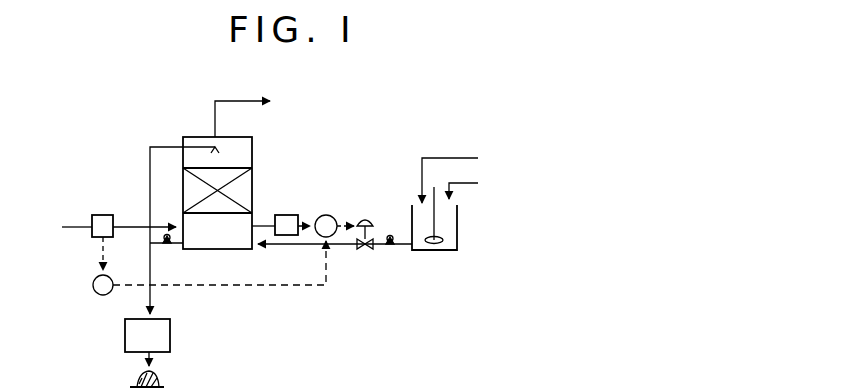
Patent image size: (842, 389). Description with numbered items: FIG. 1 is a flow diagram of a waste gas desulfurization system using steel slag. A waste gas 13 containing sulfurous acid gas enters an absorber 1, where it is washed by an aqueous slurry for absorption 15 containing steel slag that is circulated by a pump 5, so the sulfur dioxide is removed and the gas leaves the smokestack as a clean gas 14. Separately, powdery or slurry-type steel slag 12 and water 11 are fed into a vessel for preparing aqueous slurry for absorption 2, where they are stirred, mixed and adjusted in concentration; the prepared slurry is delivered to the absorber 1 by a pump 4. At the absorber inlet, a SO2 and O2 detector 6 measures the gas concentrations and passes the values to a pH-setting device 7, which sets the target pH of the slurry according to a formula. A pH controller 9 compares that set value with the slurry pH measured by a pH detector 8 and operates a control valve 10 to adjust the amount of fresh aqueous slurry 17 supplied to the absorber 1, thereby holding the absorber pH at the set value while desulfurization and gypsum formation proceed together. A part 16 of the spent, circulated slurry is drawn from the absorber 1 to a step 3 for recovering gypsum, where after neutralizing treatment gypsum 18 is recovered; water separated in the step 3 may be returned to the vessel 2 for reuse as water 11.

The absorber 1 is at (217, 193).
The vessel for preparing aqueous slurry for absorption 2 is at (434, 218).
The step for recovering gypsum 3 is at (147, 335).
The pump 4 is at (390, 256).
The pump 5 is at (166, 254).
The SO2 and O2 detector 6 is at (134, 227).
The pH-setting device 7 is at (209, 266).
The pH detector 8 is at (275, 226).
The pH controller 9 is at (326, 227).
The control valve 10 is at (369, 222).
The water 11 is at (478, 186).
The steel slag 12 is at (464, 175).
The waste gas 13 is at (64, 227).
The clean gas 14 is at (261, 114).
The aqueous slurry for absorption 15 is at (184, 216).
The part of the aqueous slurry 16 is at (164, 302).
The fresh aqueous slurry 17 is at (335, 259).
The gypsum 18 is at (164, 370).